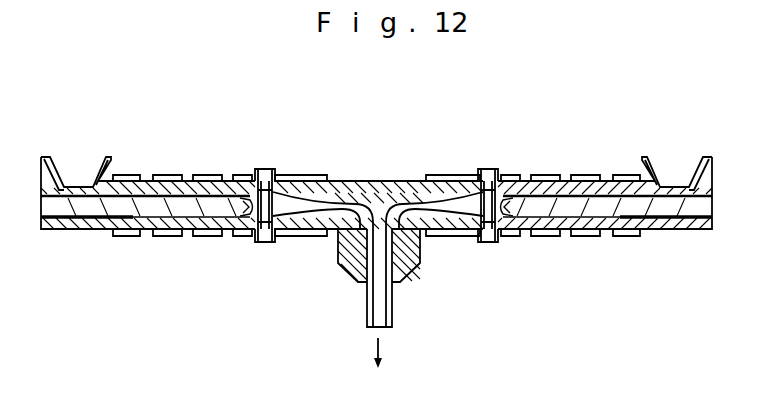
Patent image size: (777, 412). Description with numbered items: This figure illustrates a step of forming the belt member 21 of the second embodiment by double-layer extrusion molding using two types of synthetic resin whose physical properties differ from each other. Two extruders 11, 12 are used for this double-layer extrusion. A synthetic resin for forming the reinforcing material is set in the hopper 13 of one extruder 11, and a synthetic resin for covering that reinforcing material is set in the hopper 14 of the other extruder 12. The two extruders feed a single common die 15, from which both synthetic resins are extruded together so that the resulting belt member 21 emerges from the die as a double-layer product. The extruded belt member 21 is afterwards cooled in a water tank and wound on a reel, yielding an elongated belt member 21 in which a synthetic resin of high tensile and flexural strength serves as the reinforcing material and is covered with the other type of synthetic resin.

The extruder 11 is at (560, 251).
The extruder 12 is at (168, 242).
The hopper 13 is at (683, 170).
The hopper 14 is at (68, 170).
The common die 15 is at (348, 268).
The belt member 21 is at (393, 310).